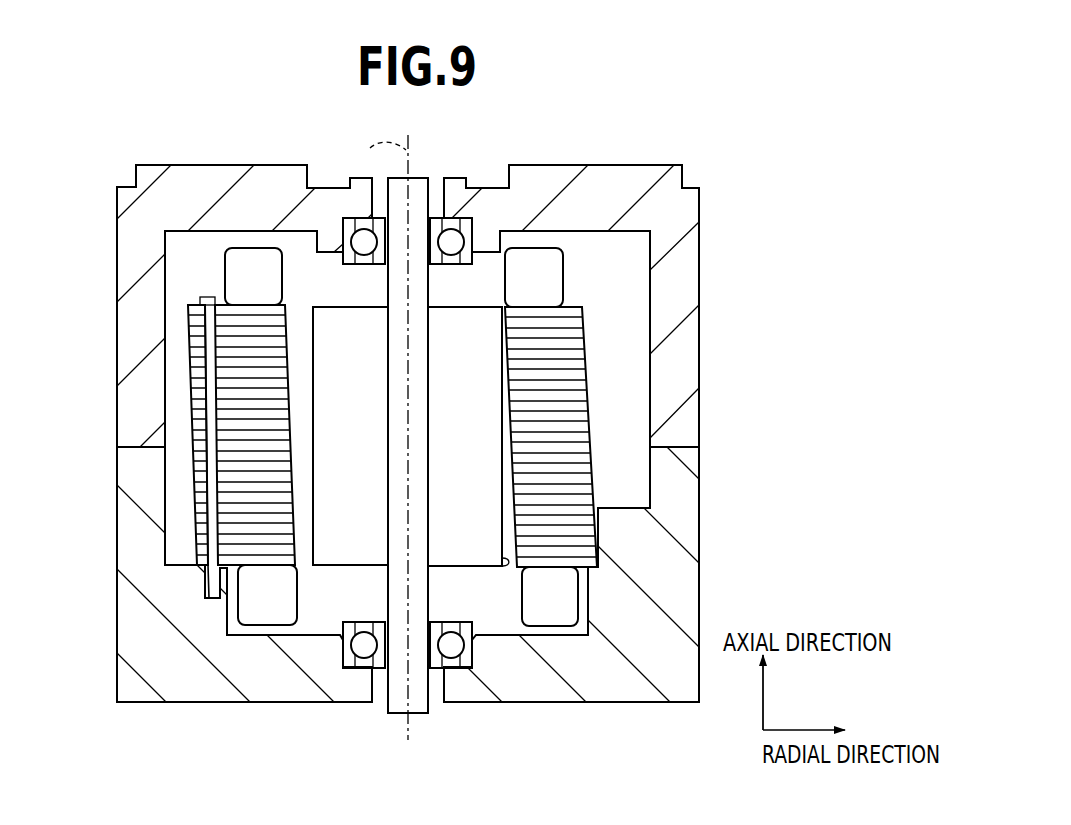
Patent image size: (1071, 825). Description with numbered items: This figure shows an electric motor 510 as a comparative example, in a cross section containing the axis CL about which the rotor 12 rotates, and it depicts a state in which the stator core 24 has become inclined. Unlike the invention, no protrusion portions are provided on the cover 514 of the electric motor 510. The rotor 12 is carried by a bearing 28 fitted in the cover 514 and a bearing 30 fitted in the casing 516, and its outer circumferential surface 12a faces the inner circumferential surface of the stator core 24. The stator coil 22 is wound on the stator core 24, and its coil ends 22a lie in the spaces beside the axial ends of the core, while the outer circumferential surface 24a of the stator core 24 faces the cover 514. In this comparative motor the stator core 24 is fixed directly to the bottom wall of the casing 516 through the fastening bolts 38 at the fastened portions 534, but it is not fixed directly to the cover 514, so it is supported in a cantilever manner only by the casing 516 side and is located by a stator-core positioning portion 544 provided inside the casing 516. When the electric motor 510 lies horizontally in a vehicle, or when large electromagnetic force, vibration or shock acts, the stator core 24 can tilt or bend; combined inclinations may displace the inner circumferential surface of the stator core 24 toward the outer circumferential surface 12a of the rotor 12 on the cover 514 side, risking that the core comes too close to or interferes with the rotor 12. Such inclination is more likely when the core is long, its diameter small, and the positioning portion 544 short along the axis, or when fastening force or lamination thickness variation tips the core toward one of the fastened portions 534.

The electric motor 510 is at (763, 144).
The cover 514 is at (122, 161).
The casing 516 is at (106, 712).
The bearing 28 is at (437, 217).
The bearing 30 is at (352, 656).
The rotor 12 is at (348, 302).
The outer circumferential surface 12a is at (505, 568).
The stator coil 22 is at (560, 237).
The coil end 22a is at (532, 609).
The stator core 24 is at (294, 433).
The outer circumferential surface 24a is at (521, 568).
The fastened portion 534 is at (191, 322).
The stator-core positioning portion 544 is at (597, 528).
The fastening bolt 38 is at (216, 594).